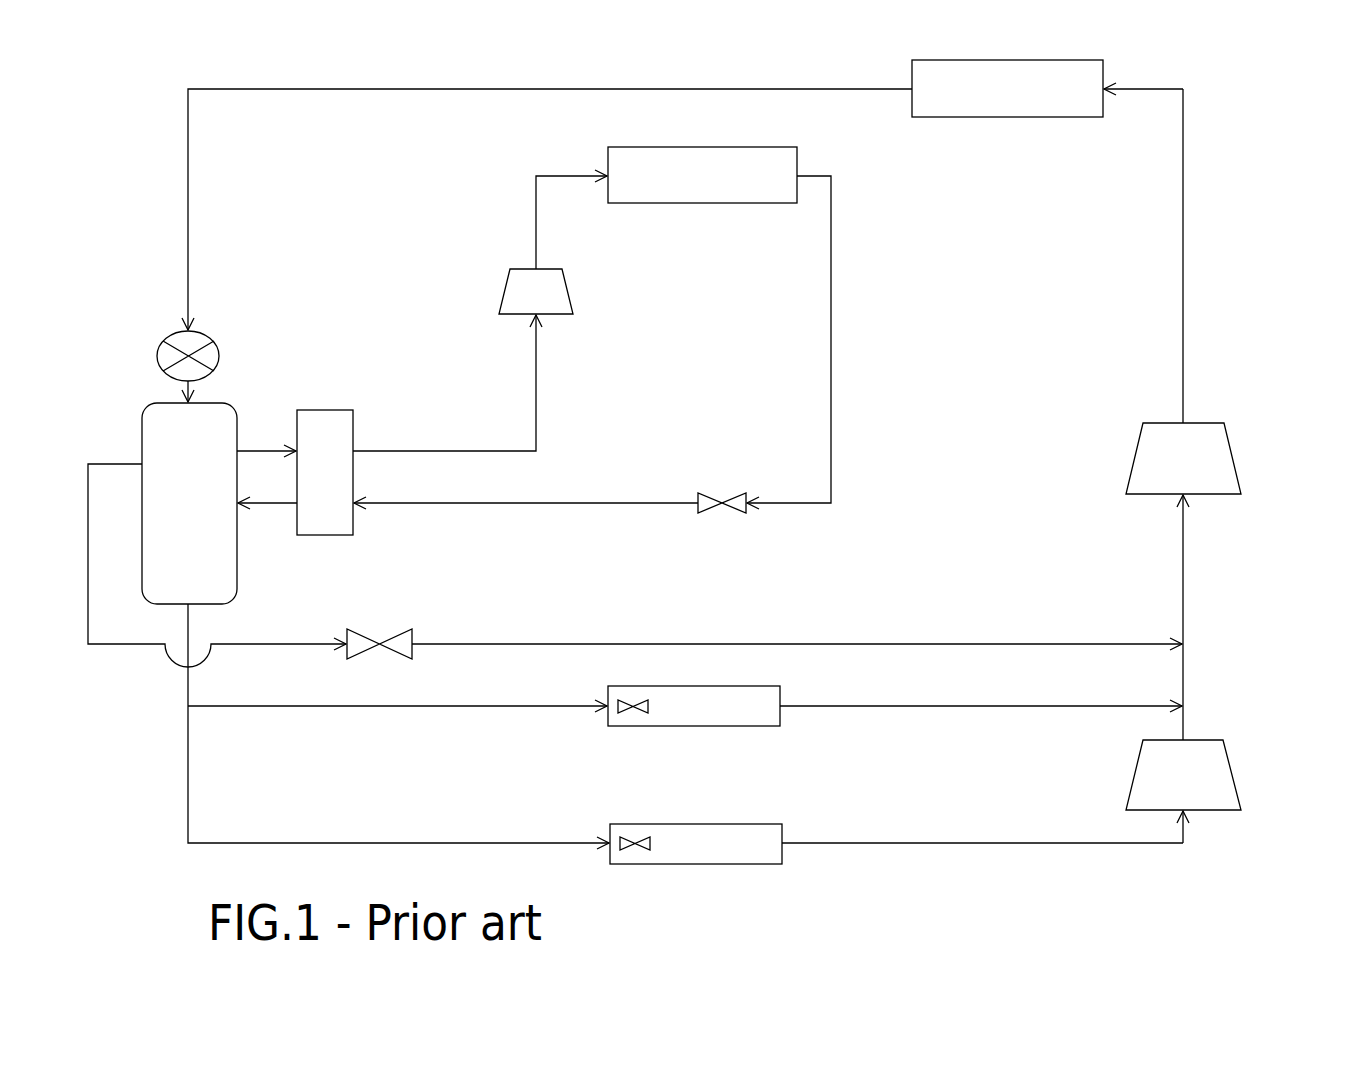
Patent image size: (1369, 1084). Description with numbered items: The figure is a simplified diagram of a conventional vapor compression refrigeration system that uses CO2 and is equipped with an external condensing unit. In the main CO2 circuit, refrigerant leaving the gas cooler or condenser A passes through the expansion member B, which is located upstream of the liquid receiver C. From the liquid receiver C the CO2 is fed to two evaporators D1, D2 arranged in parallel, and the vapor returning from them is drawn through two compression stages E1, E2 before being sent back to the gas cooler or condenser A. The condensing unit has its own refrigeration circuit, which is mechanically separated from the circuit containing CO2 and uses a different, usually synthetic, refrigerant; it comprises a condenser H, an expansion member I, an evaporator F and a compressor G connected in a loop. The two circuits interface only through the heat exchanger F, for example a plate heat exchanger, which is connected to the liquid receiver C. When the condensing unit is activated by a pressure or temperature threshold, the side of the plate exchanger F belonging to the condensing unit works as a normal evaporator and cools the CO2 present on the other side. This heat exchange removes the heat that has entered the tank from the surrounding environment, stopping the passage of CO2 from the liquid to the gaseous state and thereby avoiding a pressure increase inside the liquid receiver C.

The gas cooler or condenser A is at (1007, 88).
The expansion member B is at (156, 356).
The liquid receiver C is at (189, 503).
The evaporator D1 is at (694, 706).
The evaporator D2 is at (696, 844).
The compression stage E1 is at (1231, 763).
The compression stage E2 is at (1232, 450).
The evaporator / plate heat exchanger F is at (325, 472).
The compressor G is at (499, 290).
The condenser H is at (702, 175).
The expansion member I is at (724, 492).